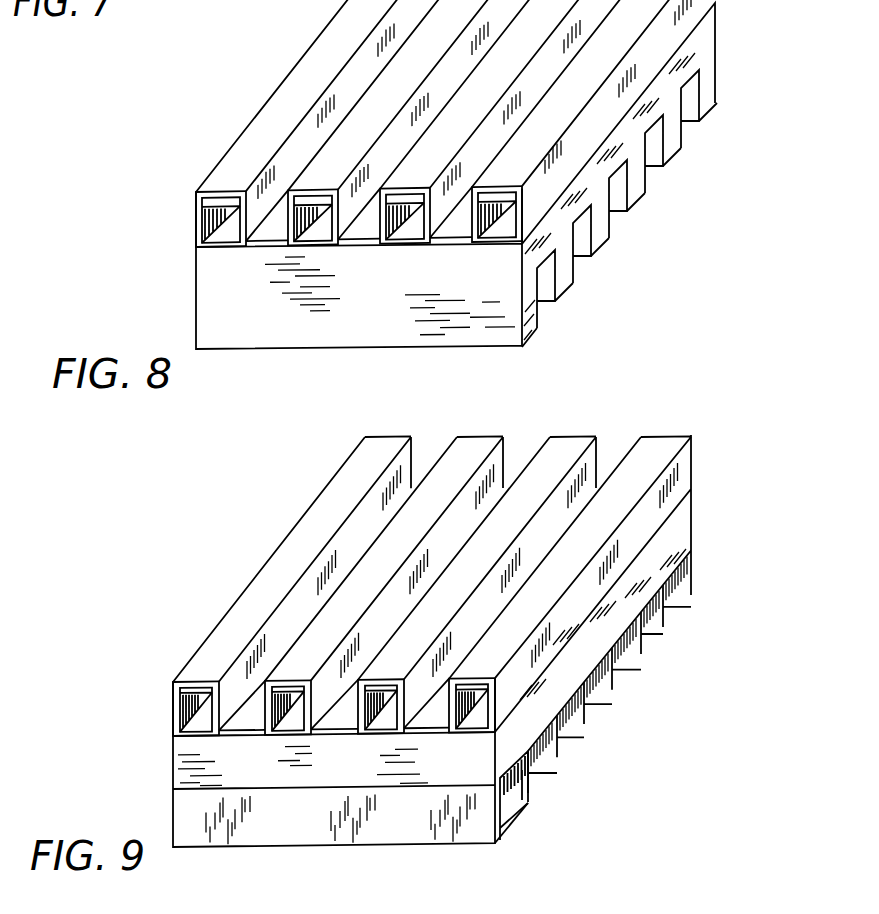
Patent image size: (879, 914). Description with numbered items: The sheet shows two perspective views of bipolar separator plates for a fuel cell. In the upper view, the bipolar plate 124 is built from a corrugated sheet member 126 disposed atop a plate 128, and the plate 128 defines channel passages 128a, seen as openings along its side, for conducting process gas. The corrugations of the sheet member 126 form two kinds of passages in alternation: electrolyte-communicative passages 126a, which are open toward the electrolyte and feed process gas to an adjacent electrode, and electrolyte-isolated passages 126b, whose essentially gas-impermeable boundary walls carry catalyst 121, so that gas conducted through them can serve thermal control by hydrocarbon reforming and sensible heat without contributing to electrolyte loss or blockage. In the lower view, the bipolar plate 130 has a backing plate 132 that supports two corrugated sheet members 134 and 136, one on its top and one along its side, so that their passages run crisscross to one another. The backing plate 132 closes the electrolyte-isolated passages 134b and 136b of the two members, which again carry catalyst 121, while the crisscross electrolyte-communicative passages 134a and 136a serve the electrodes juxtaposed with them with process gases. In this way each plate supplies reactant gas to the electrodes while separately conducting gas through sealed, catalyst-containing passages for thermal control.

In FIG. 8, the catalyst 121 is at (213, 204).
In FIG. 9, the catalyst 121 is at (186, 694).
In FIG. 8, the bipolar plate 124 is at (262, 25).
In FIG. 8, the corrugated sheet member 126 is at (254, 128).
In FIG. 8, the electrolyte-communicative passages 126a is at (260, 231).
In FIG. 8, the electrolyte-isolated catalyst-containing passages 126b is at (498, 233).
In FIG. 8, the plate 128 is at (364, 327).
In FIG. 8, the channel passages 128a is at (610, 218).
In FIG. 9, the bipolar plate 130 is at (298, 478).
In FIG. 9, the backing plate 132 is at (352, 781).
In FIG. 9, the corrugated sheet member 134 is at (247, 612).
In FIG. 9, the electrolyte-communicative passages 134a is at (428, 718).
In FIG. 9, the electrolyte-isolated passages 134b is at (294, 727).
In FIG. 9, the corrugated sheet member 136 is at (577, 750).
In FIG. 9, the electrolyte-communicative passages 136a is at (535, 788).
In FIG. 9, the electrolyte-isolated passages 136b is at (625, 664).